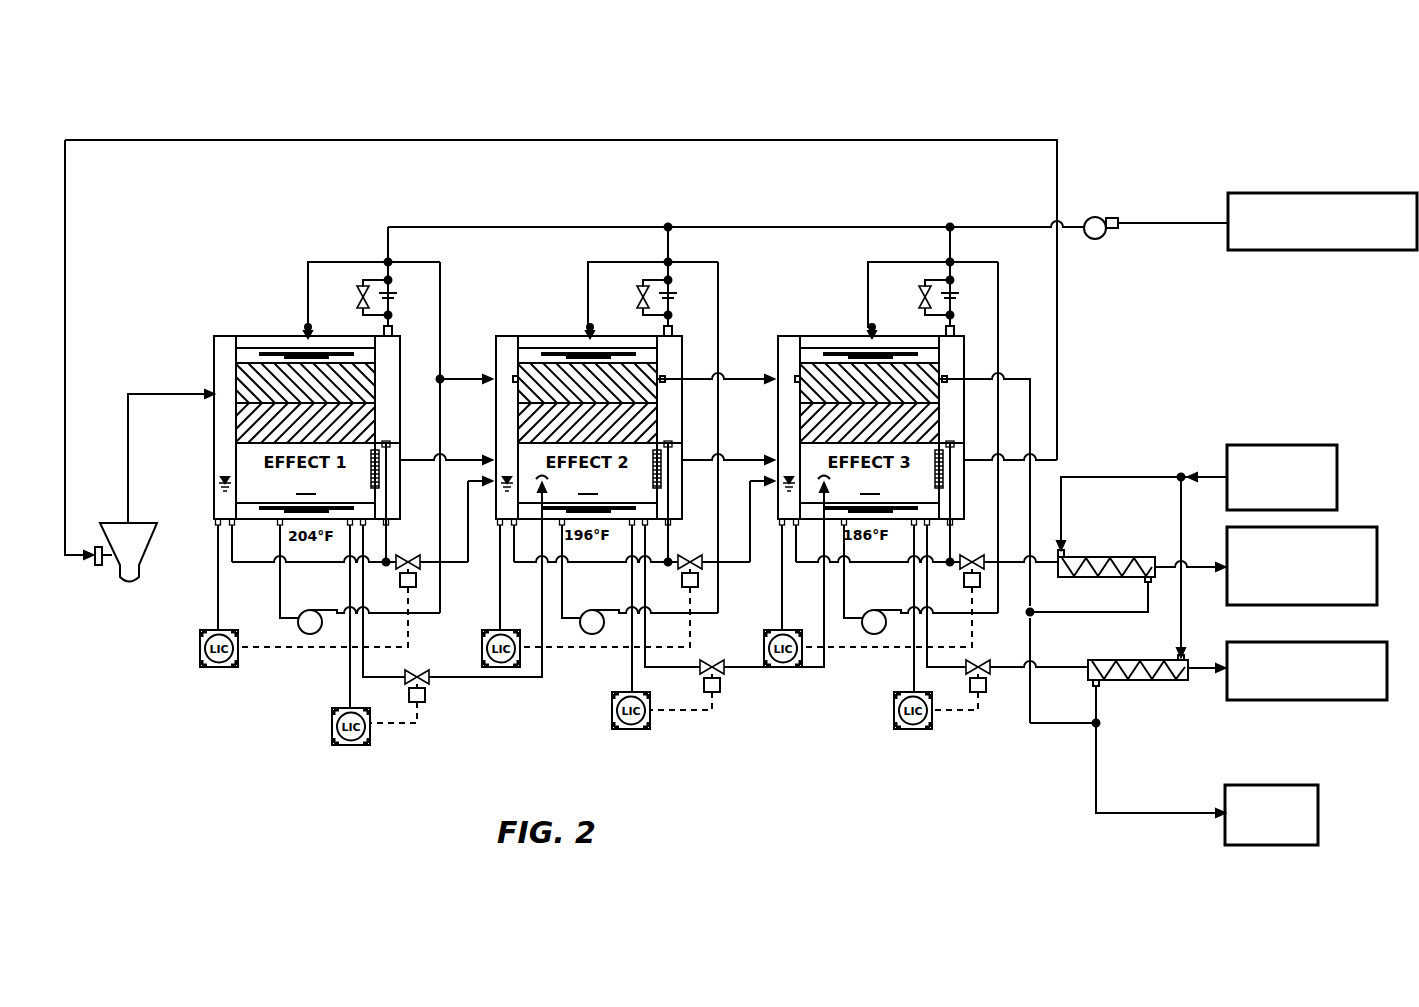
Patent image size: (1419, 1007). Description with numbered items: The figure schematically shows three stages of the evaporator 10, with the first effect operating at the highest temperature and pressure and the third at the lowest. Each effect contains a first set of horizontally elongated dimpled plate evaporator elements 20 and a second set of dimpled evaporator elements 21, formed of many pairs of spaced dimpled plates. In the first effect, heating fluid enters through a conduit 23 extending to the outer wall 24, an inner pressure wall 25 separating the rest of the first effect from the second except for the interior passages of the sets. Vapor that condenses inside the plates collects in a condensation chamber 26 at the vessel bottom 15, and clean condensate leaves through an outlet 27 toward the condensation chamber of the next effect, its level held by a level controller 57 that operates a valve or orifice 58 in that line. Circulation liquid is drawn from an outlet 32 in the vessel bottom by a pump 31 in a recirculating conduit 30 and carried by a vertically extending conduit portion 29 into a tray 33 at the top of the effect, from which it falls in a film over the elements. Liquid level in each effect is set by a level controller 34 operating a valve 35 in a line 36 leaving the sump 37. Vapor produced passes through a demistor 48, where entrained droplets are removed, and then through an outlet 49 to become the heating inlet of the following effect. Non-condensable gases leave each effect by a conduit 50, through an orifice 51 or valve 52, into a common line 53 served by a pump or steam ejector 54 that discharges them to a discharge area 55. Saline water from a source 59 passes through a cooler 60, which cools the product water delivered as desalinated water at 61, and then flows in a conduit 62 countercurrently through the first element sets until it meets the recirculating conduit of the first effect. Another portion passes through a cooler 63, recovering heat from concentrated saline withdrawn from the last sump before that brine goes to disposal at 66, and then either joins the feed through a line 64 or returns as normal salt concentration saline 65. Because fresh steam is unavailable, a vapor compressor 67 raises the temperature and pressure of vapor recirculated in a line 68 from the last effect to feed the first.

The evaporator 10 is at (464, 114).
The vessel bottom 15 is at (257, 525).
The first set of horizontally elongated dimpled plate evaporator elements 20 is at (275, 368).
The second set of horizontally elongated dimpled evaporator elements 21 is at (372, 422).
The conduit 23 is at (186, 396).
The outer wall 24 is at (214, 445).
The inner pressure wall 25 is at (232, 338).
The condensation chamber 26 is at (222, 489).
The outlet 27 is at (258, 566).
The vertically extending conduit portion 29 is at (308, 292).
The recirculating conduit 30 is at (441, 292).
The pump 31 is at (312, 636).
The outlet 32 is at (280, 562).
The tray 33 is at (412, 352).
The level controller 34 is at (350, 748).
The valve 35 is at (433, 693).
The line 36 is at (455, 677).
The circulation liquid collecting bottom portion (sump) 37 is at (588, 484).
The demistor (mist separator) 48 is at (390, 480).
The outlet 49 is at (398, 462).
The conduit 50 is at (392, 327).
The orifice 51 is at (390, 291).
The valve 52 is at (361, 290).
The line 53 is at (510, 227).
The pump (steam ejector) 54 is at (1097, 217).
The discharge area 55 is at (1318, 193).
The level controller 57 is at (219, 670).
The valve (orifice) 58 is at (404, 560).
The source 59 is at (1300, 445).
The cooler 60 is at (1105, 557).
The product desalinated water outlet 61 is at (1267, 605).
The conduit 62 is at (468, 379).
The cooler 63 is at (1155, 682).
The line 64 is at (1050, 724).
The normal salt concentration saline 65 is at (1305, 785).
The disposal 66 is at (1335, 642).
The vapor compressor 67 is at (150, 548).
The line 68 is at (620, 140).